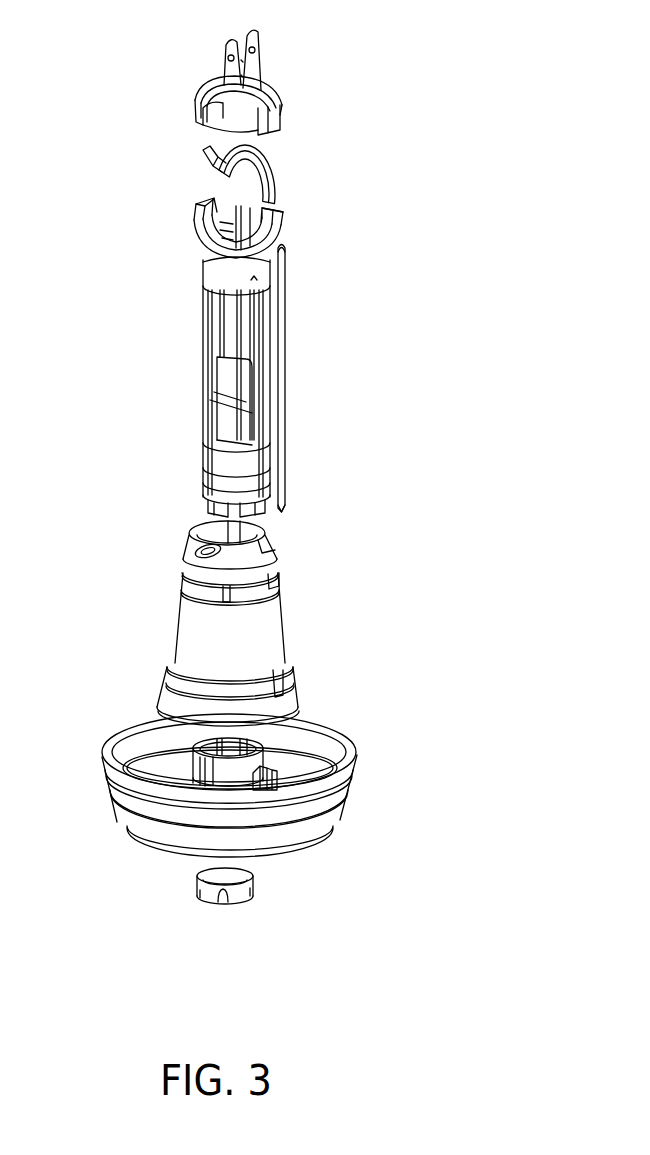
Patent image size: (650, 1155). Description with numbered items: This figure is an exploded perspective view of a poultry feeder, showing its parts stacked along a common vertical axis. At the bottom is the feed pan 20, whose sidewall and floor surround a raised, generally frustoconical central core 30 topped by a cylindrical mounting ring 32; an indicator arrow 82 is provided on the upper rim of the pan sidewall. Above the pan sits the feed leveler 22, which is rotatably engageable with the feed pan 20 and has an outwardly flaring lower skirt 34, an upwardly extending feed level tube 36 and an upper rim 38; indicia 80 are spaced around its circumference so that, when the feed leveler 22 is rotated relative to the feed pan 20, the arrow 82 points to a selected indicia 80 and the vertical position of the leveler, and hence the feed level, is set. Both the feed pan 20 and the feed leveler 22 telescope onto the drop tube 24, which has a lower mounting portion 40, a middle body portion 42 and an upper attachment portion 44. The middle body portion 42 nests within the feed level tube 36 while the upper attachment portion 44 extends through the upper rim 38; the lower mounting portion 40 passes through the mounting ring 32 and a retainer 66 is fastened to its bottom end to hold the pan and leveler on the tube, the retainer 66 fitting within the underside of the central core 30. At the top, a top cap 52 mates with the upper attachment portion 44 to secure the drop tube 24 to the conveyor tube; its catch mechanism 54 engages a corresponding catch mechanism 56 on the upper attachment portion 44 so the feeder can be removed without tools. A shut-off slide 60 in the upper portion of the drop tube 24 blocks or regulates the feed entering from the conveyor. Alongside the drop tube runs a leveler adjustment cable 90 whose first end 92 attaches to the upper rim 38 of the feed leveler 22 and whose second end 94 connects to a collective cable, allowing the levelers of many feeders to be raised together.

The feed pan 20 is at (338, 803).
The feed leveler 22 is at (222, 623).
The drop tube 24 is at (198, 335).
The central core 30 is at (190, 772).
The cylindrical mounting ring 32 is at (263, 762).
The lower skirt 34 is at (153, 690).
The feed level tube 36 is at (174, 627).
The upper rim 38 is at (188, 542).
The lower mounting portion 40 is at (192, 494).
The middle body portion 42 is at (197, 387).
The upper attachment portion 44 is at (185, 236).
The top cap 52 is at (277, 86).
The catch mechanism 54 is at (284, 122).
The catch mechanism 56 is at (257, 40).
The shut-off slide 60 is at (277, 171).
The retainer 66 is at (255, 885).
The indicia 80 is at (276, 576).
The indicator arrow 82 is at (283, 778).
The leveler adjustment cable 90 is at (284, 375).
The first end 92 is at (284, 510).
The second end 94 is at (287, 246).